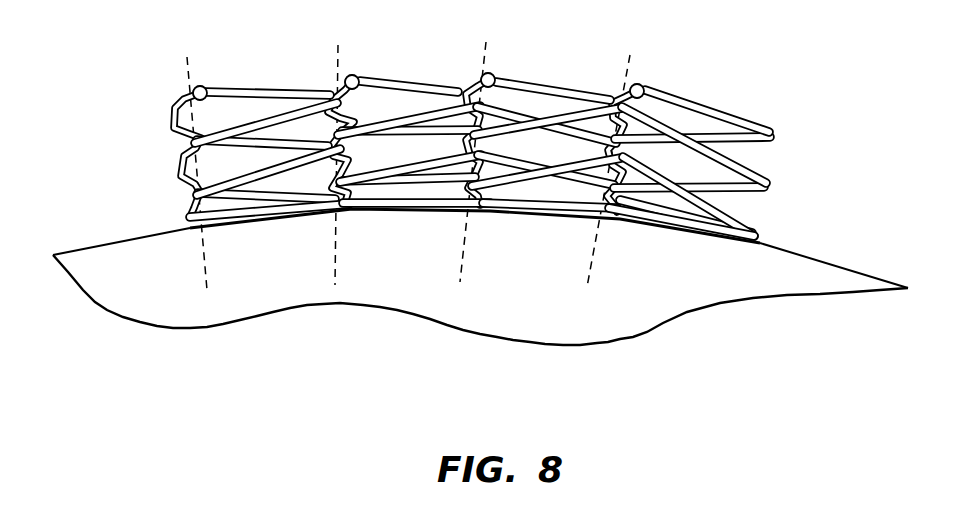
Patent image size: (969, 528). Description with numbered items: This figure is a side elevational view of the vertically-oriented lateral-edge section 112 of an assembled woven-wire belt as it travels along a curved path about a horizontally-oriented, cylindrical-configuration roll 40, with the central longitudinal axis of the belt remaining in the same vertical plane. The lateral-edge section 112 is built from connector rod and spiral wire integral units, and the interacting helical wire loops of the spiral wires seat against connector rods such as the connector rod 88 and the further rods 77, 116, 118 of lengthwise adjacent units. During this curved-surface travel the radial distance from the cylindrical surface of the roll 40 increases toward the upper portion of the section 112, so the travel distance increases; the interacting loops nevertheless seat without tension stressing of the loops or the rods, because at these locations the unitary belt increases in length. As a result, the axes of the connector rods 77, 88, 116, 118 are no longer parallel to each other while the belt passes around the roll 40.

The roll 40 is at (543, 300).
The longitudinal connecting member 77 is at (188, 101).
The connector rod 88 is at (337, 84).
The vertically-oriented lateral-edge section 112 is at (408, 133).
The longitudinal connecting member 116 is at (478, 78).
The longitudinal connecting member 118 is at (629, 90).